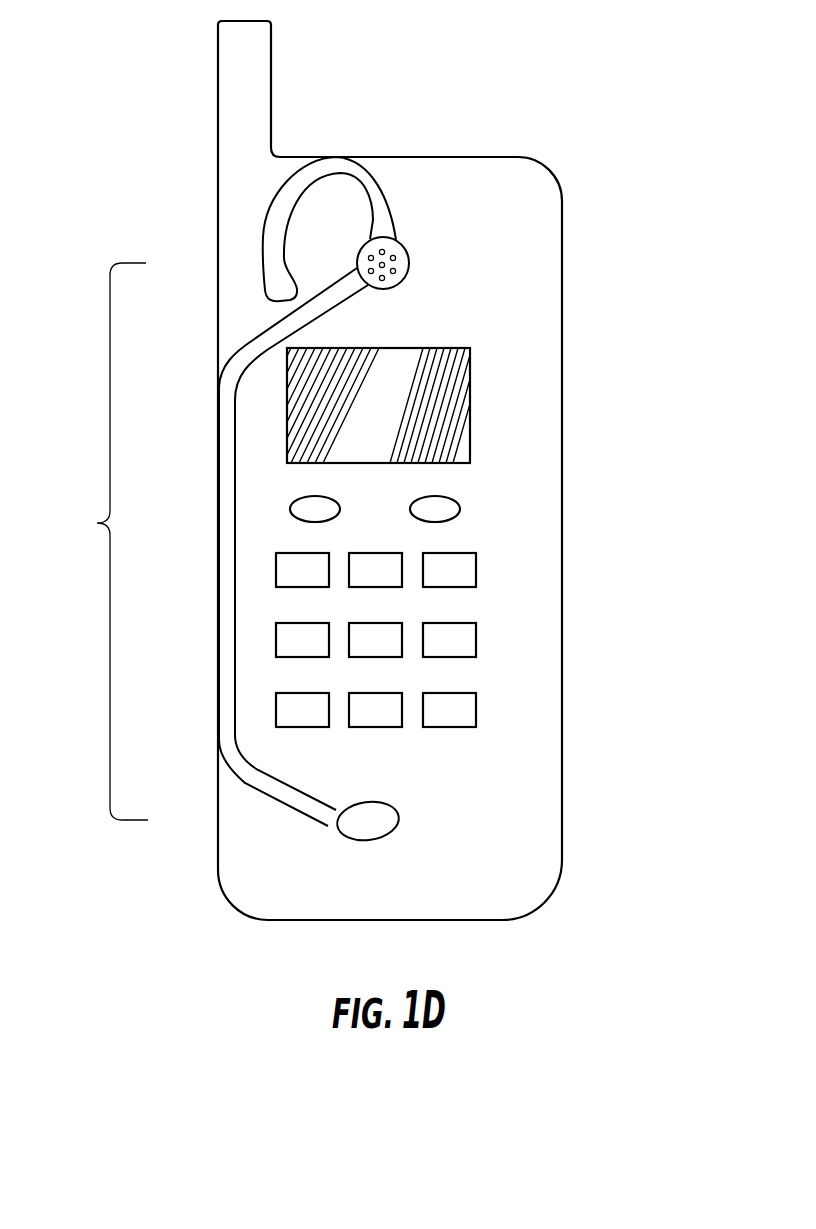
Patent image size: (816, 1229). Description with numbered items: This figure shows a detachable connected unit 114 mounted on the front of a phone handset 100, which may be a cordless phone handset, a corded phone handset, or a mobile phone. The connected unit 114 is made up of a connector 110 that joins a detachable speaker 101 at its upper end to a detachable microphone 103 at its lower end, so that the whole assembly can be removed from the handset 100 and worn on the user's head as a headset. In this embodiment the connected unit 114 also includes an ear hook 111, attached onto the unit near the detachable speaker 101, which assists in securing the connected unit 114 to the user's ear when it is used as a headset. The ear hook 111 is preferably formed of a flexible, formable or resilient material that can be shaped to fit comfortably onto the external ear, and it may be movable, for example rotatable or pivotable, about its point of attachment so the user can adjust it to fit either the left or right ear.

The phone handset 100 is at (537, 225).
The detachable speaker 101 is at (400, 246).
The detachable microphone 103 is at (368, 813).
The connector 110 is at (227, 523).
The ear hook 111 is at (310, 167).
The detachable connected unit 114 is at (96, 541).